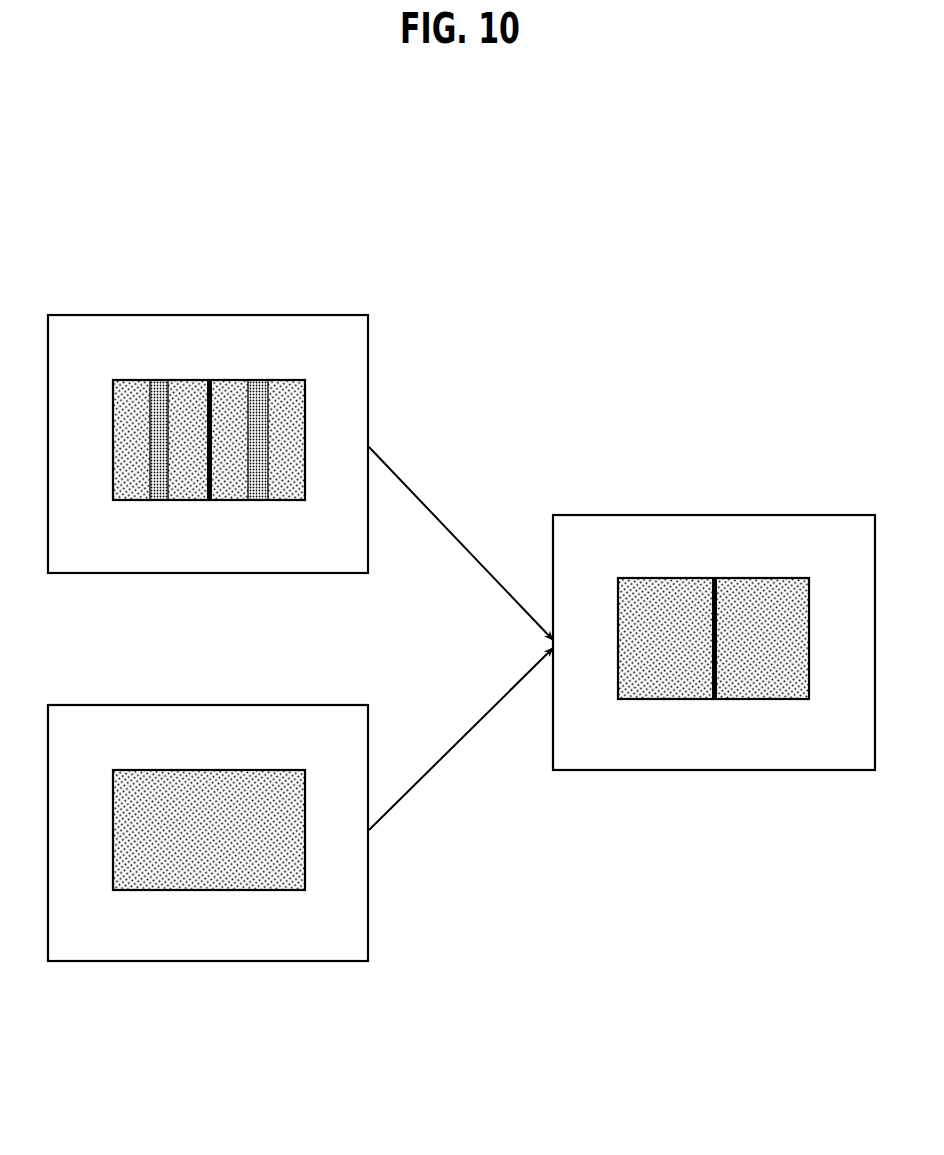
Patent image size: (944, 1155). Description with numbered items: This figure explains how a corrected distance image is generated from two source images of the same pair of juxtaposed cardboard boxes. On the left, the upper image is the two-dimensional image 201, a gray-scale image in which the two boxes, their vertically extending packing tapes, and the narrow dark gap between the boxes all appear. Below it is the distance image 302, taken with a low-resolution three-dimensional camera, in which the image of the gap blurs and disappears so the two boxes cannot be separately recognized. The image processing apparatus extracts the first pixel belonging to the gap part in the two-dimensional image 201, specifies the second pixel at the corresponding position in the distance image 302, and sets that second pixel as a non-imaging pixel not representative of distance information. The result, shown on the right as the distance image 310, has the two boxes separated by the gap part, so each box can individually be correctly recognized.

The 2D image 201 is at (85, 315).
The distance image 302 is at (85, 705).
The distance image 310 is at (590, 515).